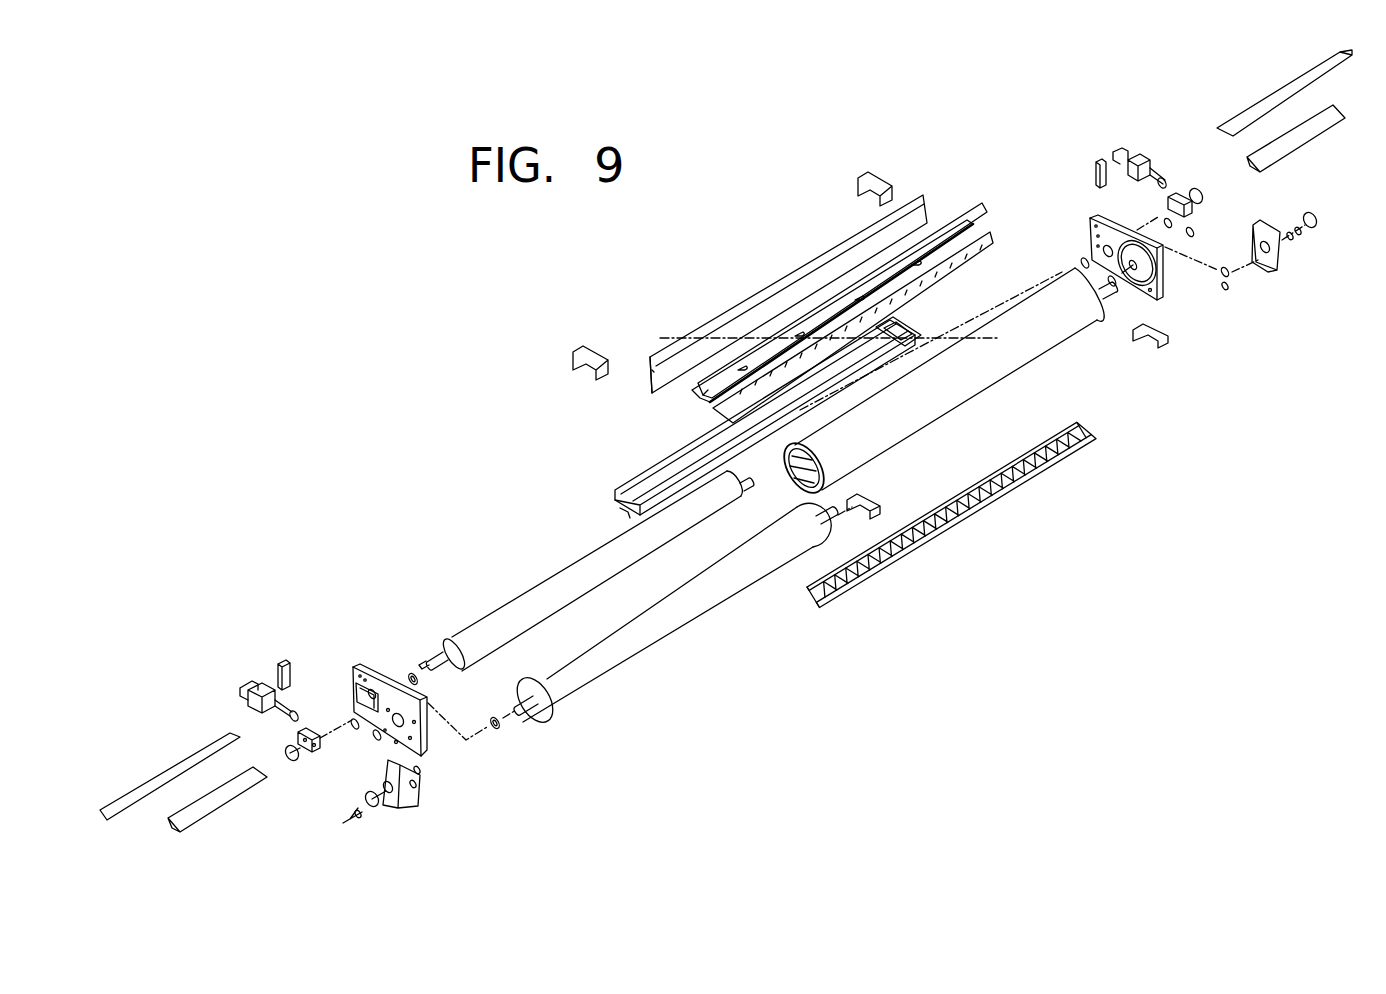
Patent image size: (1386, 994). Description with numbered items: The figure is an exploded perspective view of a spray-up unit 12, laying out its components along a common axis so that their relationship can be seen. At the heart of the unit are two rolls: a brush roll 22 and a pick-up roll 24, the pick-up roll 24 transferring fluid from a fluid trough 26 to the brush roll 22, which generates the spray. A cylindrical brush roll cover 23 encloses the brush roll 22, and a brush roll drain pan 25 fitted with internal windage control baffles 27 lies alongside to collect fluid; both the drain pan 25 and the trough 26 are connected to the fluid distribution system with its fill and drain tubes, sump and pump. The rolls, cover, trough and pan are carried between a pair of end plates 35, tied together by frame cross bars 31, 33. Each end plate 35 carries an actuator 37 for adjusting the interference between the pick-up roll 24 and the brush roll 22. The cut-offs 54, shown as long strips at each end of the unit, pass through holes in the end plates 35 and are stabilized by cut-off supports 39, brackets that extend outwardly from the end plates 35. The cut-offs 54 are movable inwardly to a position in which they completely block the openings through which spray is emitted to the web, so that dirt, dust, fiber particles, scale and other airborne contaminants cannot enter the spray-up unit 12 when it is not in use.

The spray-up unit 12 is at (561, 471).
The brush roll 22 is at (640, 647).
The brush roll cover 23 is at (1043, 337).
The pick-up roll 24 is at (553, 585).
The brush roll drain pan 25 is at (1000, 497).
The fluid trough 26 is at (673, 453).
The windage control baffles 27 is at (887, 543).
The frame cross bar 31 is at (753, 297).
The frame cross bar 33 is at (968, 228).
The end plates 35 is at (383, 678).
The actuators 37 is at (247, 697).
The cut-off supports 39 is at (230, 797).
The cut-offs 54 is at (155, 789).